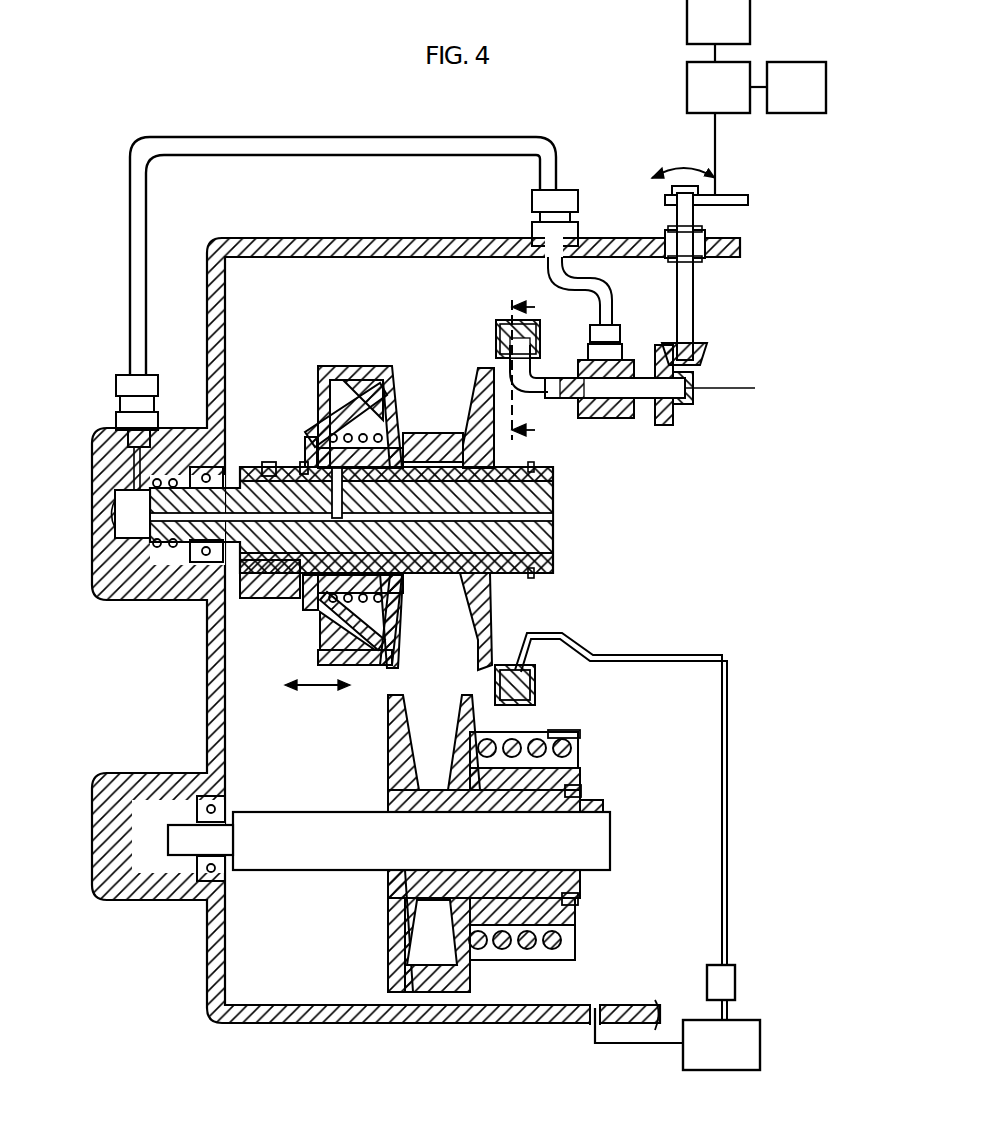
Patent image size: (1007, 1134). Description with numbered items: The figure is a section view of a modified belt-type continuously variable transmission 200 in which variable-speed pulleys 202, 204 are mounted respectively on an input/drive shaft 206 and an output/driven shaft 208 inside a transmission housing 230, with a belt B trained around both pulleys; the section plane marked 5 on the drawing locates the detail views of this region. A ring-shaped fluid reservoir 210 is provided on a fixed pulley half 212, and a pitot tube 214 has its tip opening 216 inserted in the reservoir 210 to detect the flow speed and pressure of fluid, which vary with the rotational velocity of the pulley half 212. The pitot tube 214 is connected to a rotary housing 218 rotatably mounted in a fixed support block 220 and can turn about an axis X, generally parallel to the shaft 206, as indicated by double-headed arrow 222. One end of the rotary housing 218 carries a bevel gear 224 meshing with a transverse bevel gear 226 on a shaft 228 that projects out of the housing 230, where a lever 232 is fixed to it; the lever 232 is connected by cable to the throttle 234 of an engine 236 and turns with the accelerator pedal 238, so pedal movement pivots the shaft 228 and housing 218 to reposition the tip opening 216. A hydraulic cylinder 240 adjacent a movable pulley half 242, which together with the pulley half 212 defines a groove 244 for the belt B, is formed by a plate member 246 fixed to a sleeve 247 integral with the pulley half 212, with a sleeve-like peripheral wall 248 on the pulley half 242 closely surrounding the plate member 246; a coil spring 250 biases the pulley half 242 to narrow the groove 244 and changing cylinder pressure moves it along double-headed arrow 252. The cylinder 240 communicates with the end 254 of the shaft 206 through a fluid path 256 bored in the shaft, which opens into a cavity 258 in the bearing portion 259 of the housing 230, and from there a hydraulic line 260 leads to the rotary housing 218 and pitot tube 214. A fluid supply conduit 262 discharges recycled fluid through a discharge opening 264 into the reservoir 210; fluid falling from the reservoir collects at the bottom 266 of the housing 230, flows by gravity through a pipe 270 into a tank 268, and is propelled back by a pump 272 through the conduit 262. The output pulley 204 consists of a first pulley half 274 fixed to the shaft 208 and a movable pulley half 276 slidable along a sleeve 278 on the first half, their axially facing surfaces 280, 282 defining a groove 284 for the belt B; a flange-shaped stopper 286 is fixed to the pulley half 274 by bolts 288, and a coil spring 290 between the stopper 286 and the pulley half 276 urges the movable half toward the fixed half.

The belt-type continuously variable transmission 200 is at (745, 485).
The variable-speed pulley 202 is at (352, 352).
The variable-speed pulley 204 is at (380, 940).
The input/drive shaft 206 is at (553, 490).
The output/driven shaft 208 is at (600, 800).
The fluid reservoir 210 is at (512, 320).
The fixed pulley half 212 is at (490, 432).
The pitot tube 214 is at (540, 375).
The tip opening 216 is at (500, 328).
The rotary housing 218 is at (606, 360).
The fixed support block 220 is at (615, 418).
The double-headed arrow 222 is at (496, 370).
The bevel gear 224 is at (680, 410).
The transverse bevel gear 226 is at (700, 352).
The shaft 228 is at (700, 290).
The transmission housing 230 is at (380, 238).
The lever 232 is at (733, 205).
The throttle 234 is at (740, 102).
The engine 236 is at (740, 35).
The accelerator pedal 238 is at (818, 102).
The hydraulic cylinder 240 is at (320, 400).
The movable pulley half 242 is at (395, 378).
The groove 244 is at (405, 655).
The plate member 246 is at (318, 438).
The sleeve 247 is at (302, 462).
The peripheral wall 248 is at (325, 634).
The coil spring 250 is at (318, 600).
The double-headed arrow 252 is at (320, 672).
The end 254 is at (150, 480).
The fluid path 256 is at (553, 522).
The cavity 258 is at (125, 520).
The bearing portion 259 is at (105, 440).
The hydraulic line 260 is at (345, 148).
The fluid supply conduit 262 is at (727, 732).
The discharge opening 264 is at (540, 676).
The bottom 266 is at (485, 1015).
The tank 268 is at (742, 1060).
The pipe 270 is at (600, 1043).
The pump 272 is at (725, 982).
The first pulley half 274 is at (398, 745).
The movable pulley half 276 is at (478, 745).
The sleeve 278 is at (560, 795).
The axially facing surface 280 is at (418, 740).
The axially facing surface 282 is at (462, 700).
The groove 284 is at (405, 992).
The flange-shaped stopper 286 is at (575, 738).
The bolts 288 is at (580, 900).
The coil spring 290 is at (525, 955).
The belt B is at (428, 440).
The section line 5 is at (533, 371).
The axis X is at (725, 378).